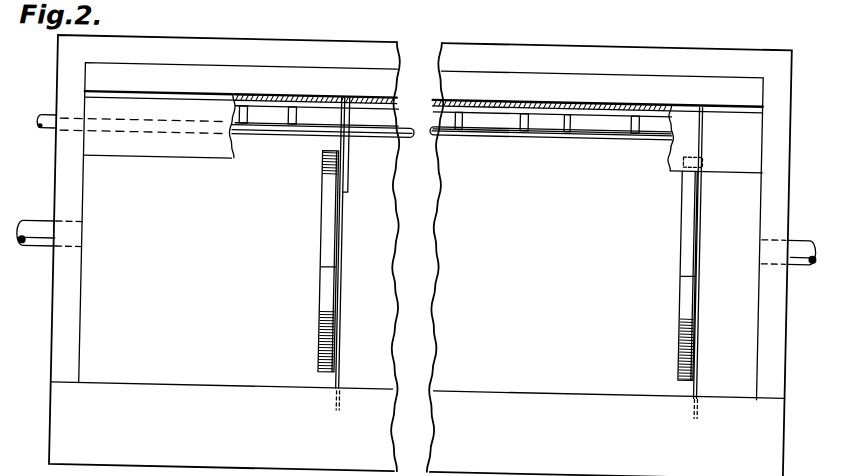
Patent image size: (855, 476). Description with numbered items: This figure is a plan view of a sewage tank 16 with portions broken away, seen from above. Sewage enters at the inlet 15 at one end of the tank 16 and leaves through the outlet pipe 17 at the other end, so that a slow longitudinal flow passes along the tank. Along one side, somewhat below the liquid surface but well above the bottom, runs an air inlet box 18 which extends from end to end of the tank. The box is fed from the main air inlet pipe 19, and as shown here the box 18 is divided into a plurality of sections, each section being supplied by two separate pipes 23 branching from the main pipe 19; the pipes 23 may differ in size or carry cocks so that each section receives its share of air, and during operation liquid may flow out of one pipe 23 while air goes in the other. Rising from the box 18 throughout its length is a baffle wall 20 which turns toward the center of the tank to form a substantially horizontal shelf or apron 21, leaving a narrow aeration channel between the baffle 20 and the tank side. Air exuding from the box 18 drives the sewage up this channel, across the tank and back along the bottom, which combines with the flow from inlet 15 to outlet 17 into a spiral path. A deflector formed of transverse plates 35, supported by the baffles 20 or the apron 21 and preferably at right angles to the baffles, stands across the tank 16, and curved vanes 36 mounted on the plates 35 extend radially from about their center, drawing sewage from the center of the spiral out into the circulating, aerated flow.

The inlet 15 is at (34, 222).
The tank 16 is at (238, 226).
The outlet pipe 17 is at (805, 251).
The air inlet box 18 is at (652, 102).
The air inlet pipe 19 is at (44, 113).
The baffle wall 20 is at (586, 89).
The apron 21 is at (198, 155).
The pipes 23 is at (297, 110).
The plates 35 is at (347, 269).
The vanes 36 is at (336, 210).